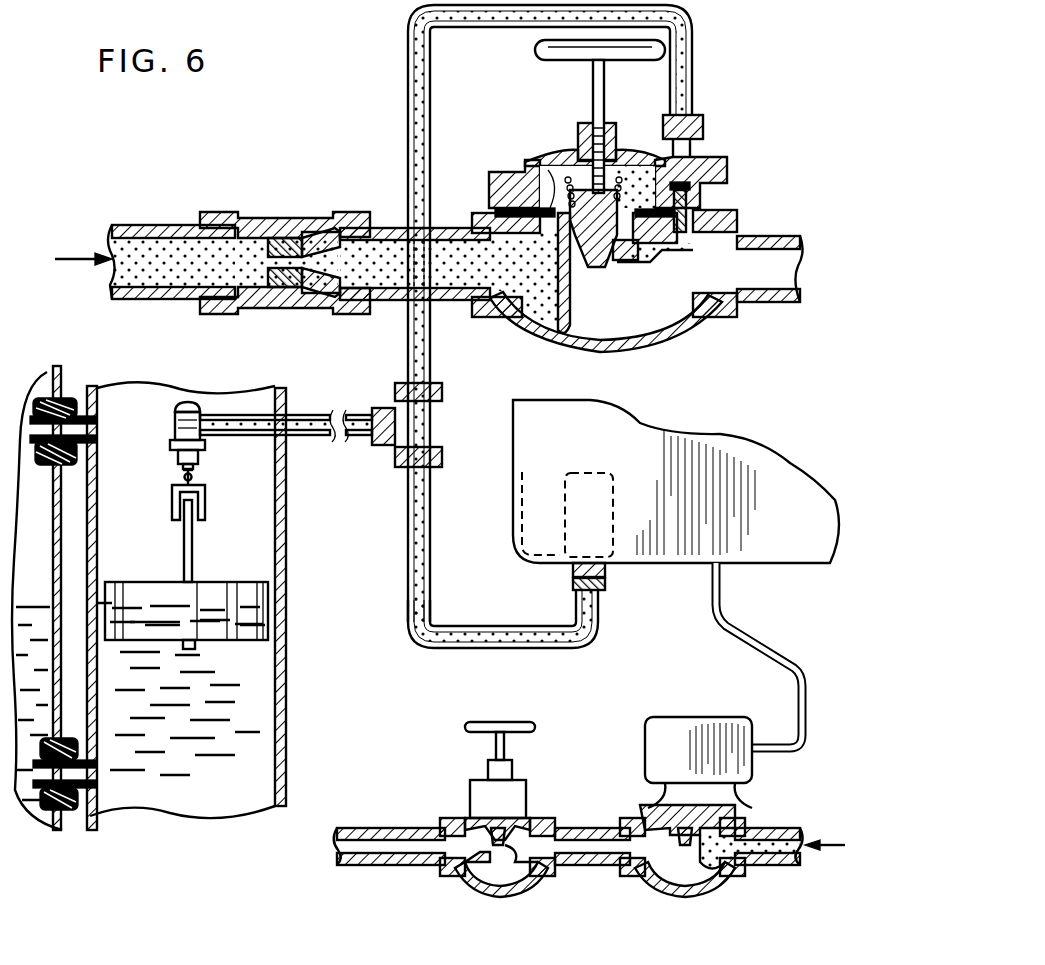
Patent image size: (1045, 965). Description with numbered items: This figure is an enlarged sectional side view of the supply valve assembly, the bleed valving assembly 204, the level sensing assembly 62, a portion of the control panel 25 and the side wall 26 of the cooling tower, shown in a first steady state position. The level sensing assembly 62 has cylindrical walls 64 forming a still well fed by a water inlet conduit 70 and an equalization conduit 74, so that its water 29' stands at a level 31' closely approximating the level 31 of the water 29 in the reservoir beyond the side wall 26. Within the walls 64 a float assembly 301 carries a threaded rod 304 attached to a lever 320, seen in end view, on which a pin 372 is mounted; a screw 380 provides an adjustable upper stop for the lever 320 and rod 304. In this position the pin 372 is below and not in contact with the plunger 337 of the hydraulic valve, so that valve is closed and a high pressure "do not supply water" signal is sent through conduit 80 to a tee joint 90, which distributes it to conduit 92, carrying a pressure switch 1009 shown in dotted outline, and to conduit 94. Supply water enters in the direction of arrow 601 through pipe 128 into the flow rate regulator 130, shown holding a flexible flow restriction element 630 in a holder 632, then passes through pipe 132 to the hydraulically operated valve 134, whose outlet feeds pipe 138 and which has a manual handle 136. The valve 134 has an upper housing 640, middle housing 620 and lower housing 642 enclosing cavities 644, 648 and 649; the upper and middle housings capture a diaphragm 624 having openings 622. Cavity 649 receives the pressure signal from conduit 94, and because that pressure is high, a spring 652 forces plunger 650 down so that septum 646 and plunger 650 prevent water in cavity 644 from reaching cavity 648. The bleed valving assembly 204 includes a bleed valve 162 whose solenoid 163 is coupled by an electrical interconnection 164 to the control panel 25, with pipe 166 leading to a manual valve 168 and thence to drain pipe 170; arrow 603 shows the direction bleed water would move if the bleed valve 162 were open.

The control panel 25 is at (652, 461).
The side wall 26 is at (61, 507).
The water 29 is at (31, 712).
The water 29' is at (185, 713).
The water level 31 is at (33, 587).
The water level 31' is at (181, 590).
The level sensing assembly 62 is at (170, 834).
The cylindrical walls 64 is at (97, 510).
The water inlet conduit 70 is at (97, 771).
The equalization conduit 74 is at (97, 427).
The conduit 80 is at (375, 414).
The tee joint 90 is at (442, 432).
The conduit 92 is at (512, 634).
The conduit 94 is at (418, 100).
The pipe 128 is at (160, 225).
The flow rate regulator 130 is at (278, 212).
The pipe 132 is at (395, 306).
The hydraulically operated valve 134 is at (706, 338).
The manual handle 136 is at (593, 94).
The pipe 138 is at (772, 305).
The bleed valve 162 is at (668, 896).
The solenoid 163 is at (698, 757).
The electrical interconnection 164 is at (772, 650).
The pipe 166 is at (585, 868).
The manual valve 168 is at (480, 896).
The drain pipe 170 is at (400, 868).
The bleed valving assembly 204 is at (583, 752).
The float assembly 301 is at (210, 583).
The threaded rod 304 is at (196, 557).
The lever 320 is at (205, 514).
The plunger 337 is at (200, 474).
The pin 372 is at (178, 482).
The screw 380 is at (175, 430).
The direction arrow 601 is at (70, 263).
The direction indicating arrow 603 is at (840, 843).
The middle housing 620 is at (490, 205).
The openings 622 is at (548, 247).
The diaphragm 624 is at (632, 200).
The flexible flow restriction element 630 is at (300, 272).
The holder 632 is at (268, 252).
The upper housing 640 is at (575, 154).
The lower housing 642 is at (598, 352).
The cavity 644 is at (542, 300).
The septum 646 is at (568, 302).
The cavity 648 is at (680, 313).
The cavity 649 is at (695, 168).
The plunger 650 is at (598, 270).
The spring 652 is at (545, 165).
The pressure switch 1009 is at (614, 532).